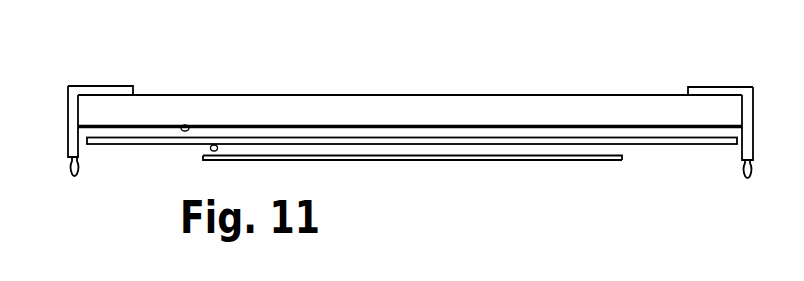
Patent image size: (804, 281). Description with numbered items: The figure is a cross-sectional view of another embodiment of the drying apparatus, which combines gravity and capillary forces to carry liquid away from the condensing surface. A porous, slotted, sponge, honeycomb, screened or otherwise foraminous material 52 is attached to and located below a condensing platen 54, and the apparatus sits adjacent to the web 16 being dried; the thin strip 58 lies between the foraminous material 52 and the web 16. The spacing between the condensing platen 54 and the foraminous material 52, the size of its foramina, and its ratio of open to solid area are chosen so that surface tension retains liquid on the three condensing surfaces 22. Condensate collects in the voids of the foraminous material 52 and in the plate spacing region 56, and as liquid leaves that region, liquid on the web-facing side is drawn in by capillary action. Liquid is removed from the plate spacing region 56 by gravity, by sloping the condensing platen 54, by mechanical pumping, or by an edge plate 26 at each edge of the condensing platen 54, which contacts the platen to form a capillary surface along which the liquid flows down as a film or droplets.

The condensing platen 54 is at (463, 105).
The plate spacing region 56 is at (92, 130).
The edge plate 26 is at (742, 150).
The condensing surfaces 22 is at (216, 145).
The foraminous material 52 is at (675, 144).
The lower strip 58 is at (600, 148).
The web 16 is at (365, 162).